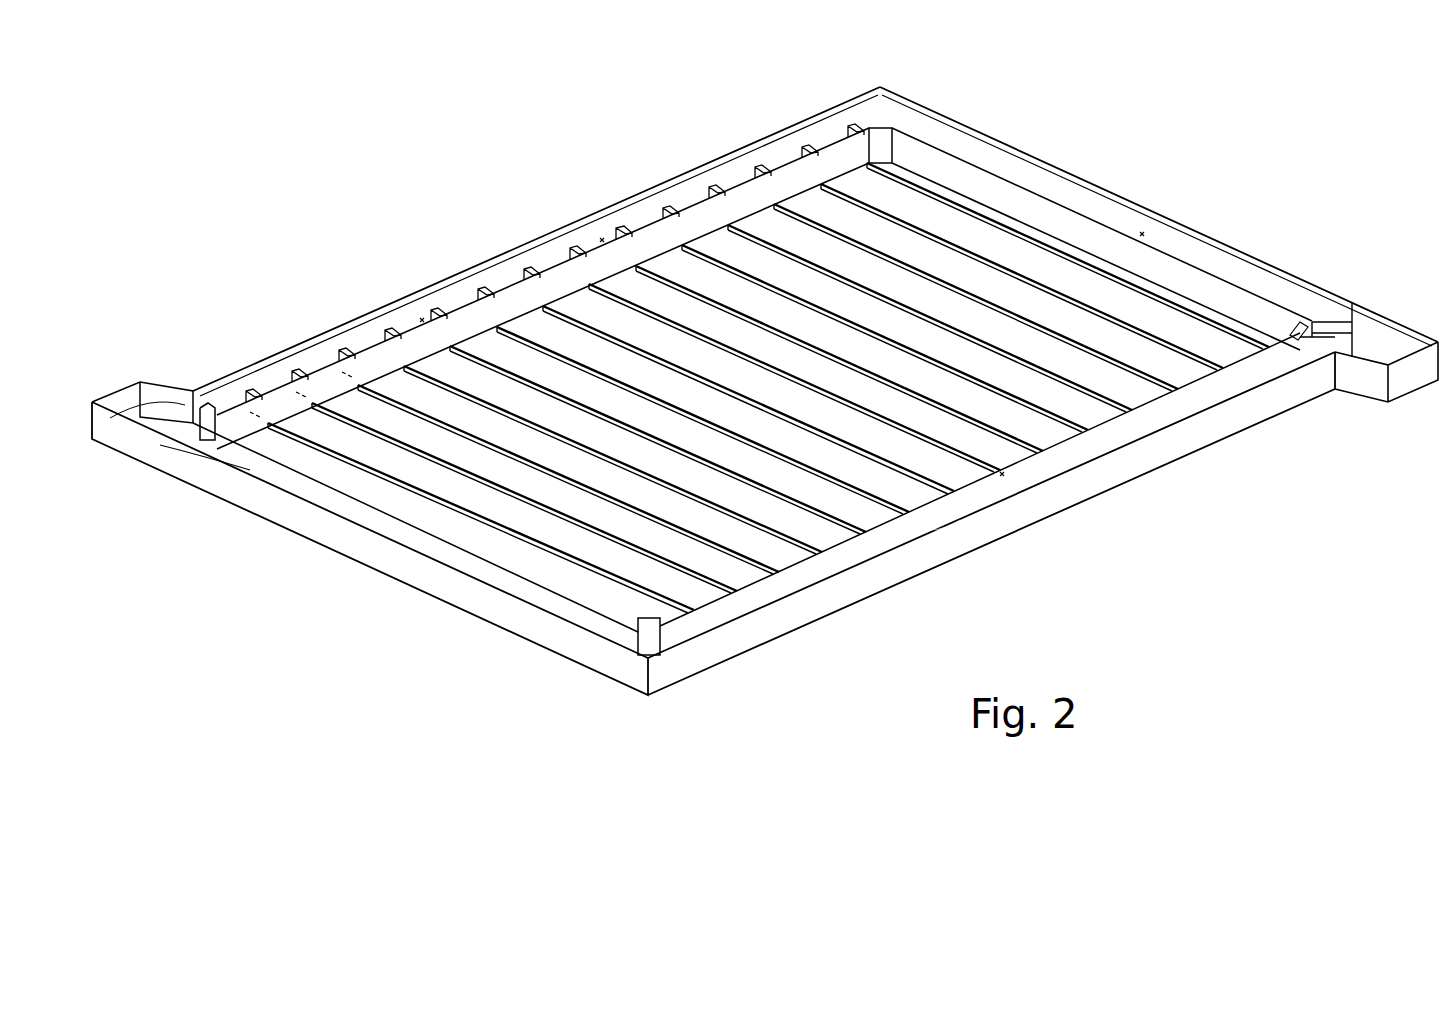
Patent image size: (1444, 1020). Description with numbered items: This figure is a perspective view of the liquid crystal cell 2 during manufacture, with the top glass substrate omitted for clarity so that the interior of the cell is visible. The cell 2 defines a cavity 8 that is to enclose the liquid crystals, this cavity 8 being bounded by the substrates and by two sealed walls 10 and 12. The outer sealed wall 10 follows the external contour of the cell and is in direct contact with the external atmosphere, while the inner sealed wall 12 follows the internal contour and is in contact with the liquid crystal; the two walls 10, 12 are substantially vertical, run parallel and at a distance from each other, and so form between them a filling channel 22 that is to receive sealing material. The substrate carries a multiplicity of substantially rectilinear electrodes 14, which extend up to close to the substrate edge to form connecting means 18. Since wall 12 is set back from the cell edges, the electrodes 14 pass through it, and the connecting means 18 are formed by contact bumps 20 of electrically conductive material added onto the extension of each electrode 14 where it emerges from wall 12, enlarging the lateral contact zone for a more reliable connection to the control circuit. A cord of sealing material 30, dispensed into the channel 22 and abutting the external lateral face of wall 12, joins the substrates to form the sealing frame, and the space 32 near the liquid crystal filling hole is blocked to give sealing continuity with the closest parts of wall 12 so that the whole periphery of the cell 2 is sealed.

The liquid crystal cell 2 is at (973, 92).
The cavity 8 is at (757, 389).
The sealed wall 10 is at (752, 640).
The sealed wall 12 is at (530, 298).
The electrodes 14 is at (505, 455).
The connecting means 18 is at (608, 210).
The contact bumps 20 is at (760, 170).
The filling channel 22 is at (1140, 218).
The cord of sealing material 30 is at (253, 462).
The space 32 is at (628, 655).